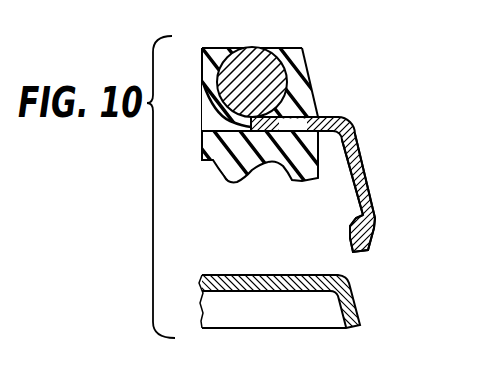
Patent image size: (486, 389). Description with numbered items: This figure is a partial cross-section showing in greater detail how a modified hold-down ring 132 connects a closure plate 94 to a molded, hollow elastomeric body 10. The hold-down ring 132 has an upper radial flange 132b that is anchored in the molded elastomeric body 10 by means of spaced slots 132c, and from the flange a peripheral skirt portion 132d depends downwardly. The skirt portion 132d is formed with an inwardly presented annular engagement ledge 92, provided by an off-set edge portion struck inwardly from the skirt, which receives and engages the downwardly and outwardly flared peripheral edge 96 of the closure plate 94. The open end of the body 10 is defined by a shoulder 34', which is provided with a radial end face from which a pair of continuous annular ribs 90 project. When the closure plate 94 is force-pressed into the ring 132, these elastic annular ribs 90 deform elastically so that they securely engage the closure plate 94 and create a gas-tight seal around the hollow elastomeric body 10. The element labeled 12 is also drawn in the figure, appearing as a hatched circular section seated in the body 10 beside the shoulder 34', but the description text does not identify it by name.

The molded elastomeric body 10 is at (290, 46).
The O-ring seal 12 is at (300, 74).
The shoulder 34' is at (345, 82).
The hold-down ring 132 is at (351, 121).
The upper radial flange 132b is at (204, 120).
The spaced slots 132c is at (300, 178).
The depending peripheral skirt portion 132d is at (369, 193).
The continuous annular ribs 90 is at (292, 178).
The annular engagement ledge 92 is at (352, 222).
The closure plate 94 is at (349, 283).
The downwardly and outwardly flared peripheral edge 96 is at (348, 330).